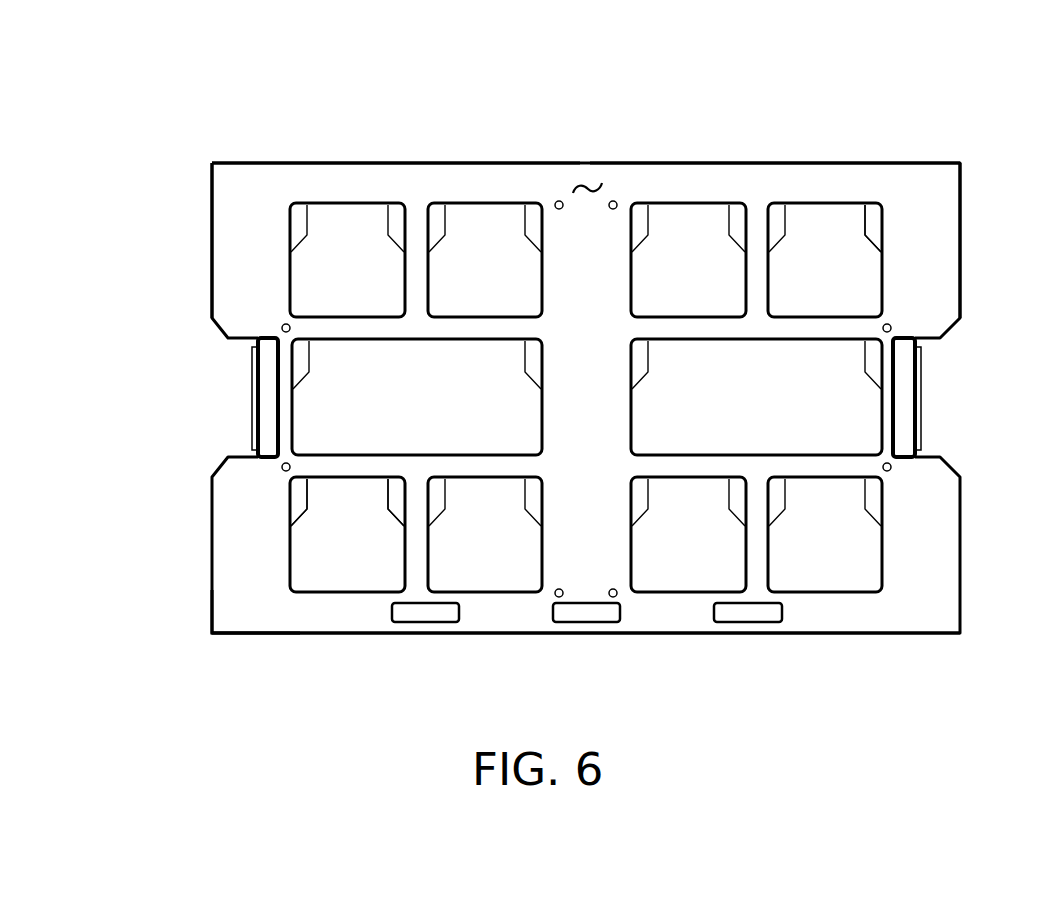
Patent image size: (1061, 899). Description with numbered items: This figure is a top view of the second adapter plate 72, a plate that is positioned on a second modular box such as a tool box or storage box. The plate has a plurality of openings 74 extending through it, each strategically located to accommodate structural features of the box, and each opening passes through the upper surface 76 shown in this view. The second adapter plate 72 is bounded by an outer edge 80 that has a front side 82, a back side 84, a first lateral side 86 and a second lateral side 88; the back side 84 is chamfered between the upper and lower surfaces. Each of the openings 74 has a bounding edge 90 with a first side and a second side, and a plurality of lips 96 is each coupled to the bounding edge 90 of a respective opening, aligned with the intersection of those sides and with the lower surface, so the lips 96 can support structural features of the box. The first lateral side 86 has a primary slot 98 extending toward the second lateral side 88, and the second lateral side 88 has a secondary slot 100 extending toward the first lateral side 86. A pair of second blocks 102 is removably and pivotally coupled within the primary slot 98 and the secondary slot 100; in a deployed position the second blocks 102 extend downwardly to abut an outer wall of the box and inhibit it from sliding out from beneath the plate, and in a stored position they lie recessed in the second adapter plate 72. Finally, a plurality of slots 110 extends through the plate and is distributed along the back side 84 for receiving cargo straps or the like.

The second adapter plate 72 is at (222, 163).
The openings 74 is at (344, 240).
The upper surface 76 is at (586, 185).
The outer edge 80 is at (450, 163).
The front side 82 is at (688, 163).
The back side 84 is at (737, 633).
The first lateral side 86 is at (212, 272).
The second lateral side 88 is at (960, 280).
The bounding edge 90 is at (292, 578).
The lips 96 is at (870, 218).
The primary slot 98 is at (268, 350).
The secondary slot 100 is at (900, 383).
The second blocks 102 is at (257, 420).
The slots 110 is at (447, 612).